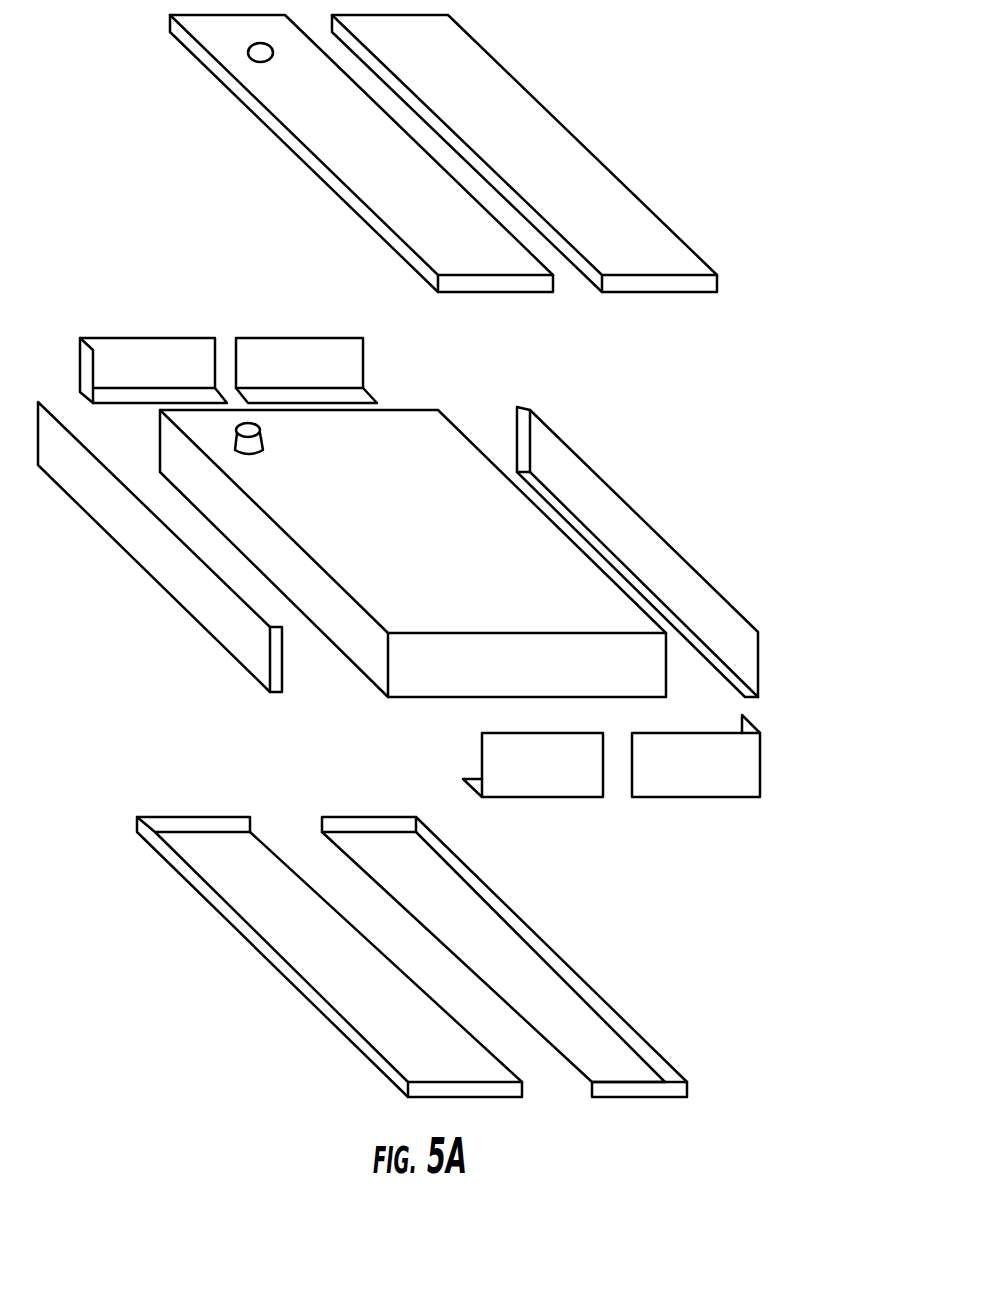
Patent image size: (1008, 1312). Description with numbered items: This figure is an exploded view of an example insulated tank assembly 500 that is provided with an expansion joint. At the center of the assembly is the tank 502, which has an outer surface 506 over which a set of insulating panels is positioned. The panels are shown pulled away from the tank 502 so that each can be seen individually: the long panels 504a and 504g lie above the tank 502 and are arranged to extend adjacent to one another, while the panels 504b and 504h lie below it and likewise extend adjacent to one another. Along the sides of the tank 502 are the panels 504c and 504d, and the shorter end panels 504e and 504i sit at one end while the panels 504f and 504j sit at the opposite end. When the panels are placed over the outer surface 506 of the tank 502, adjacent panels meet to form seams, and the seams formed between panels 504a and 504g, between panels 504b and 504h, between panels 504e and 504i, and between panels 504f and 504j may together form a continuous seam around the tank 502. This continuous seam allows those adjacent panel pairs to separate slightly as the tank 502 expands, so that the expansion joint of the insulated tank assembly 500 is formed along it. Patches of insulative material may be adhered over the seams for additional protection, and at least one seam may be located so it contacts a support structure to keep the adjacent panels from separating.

The insulated tank assembly 500 is at (592, 83).
The tank 502 is at (434, 549).
The panel 504a is at (315, 162).
The panel 504b is at (532, 963).
The panel 504c is at (180, 575).
The panel 504d is at (633, 530).
The panel 504e is at (133, 337).
The panel 504f is at (557, 783).
The panel 504g is at (572, 160).
The panel 504h is at (282, 938).
The panel 504i is at (287, 337).
The panel 504j is at (710, 785).
The outer surface 506 is at (448, 443).